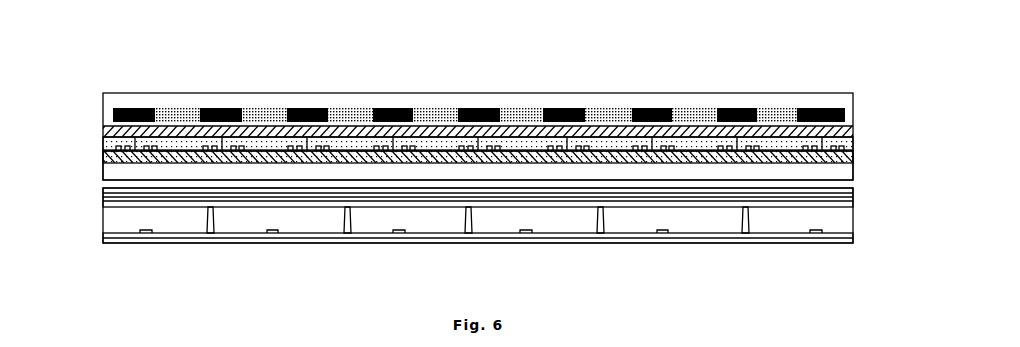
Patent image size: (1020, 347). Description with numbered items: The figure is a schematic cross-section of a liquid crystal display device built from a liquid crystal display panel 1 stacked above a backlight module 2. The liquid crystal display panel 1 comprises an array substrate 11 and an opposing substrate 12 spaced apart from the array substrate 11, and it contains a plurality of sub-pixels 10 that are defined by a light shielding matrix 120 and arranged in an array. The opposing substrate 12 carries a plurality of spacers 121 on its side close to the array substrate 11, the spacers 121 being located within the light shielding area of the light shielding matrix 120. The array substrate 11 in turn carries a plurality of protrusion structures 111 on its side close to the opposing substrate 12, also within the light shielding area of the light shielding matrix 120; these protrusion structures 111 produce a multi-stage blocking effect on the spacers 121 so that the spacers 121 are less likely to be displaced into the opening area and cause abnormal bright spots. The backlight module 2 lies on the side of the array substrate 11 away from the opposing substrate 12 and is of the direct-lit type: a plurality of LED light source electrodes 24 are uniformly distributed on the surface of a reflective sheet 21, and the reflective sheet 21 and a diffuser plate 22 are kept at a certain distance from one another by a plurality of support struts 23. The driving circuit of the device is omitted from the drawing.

The liquid crystal display panel 1 is at (476, 105).
The backlight module 2 is at (467, 235).
The sub-pixels 10 is at (435, 108).
The array substrate 11 is at (504, 165).
The opposing substrate 12 is at (509, 73).
The protrusion structures 111 is at (101, 163).
The light shielding matrix 120 is at (308, 108).
The spacers 121 is at (110, 143).
The reflective sheet 21 is at (103, 238).
The diffuser plate 22 is at (103, 207).
The support struts 23 is at (207, 212).
The LED light source electrodes 24 is at (401, 235).